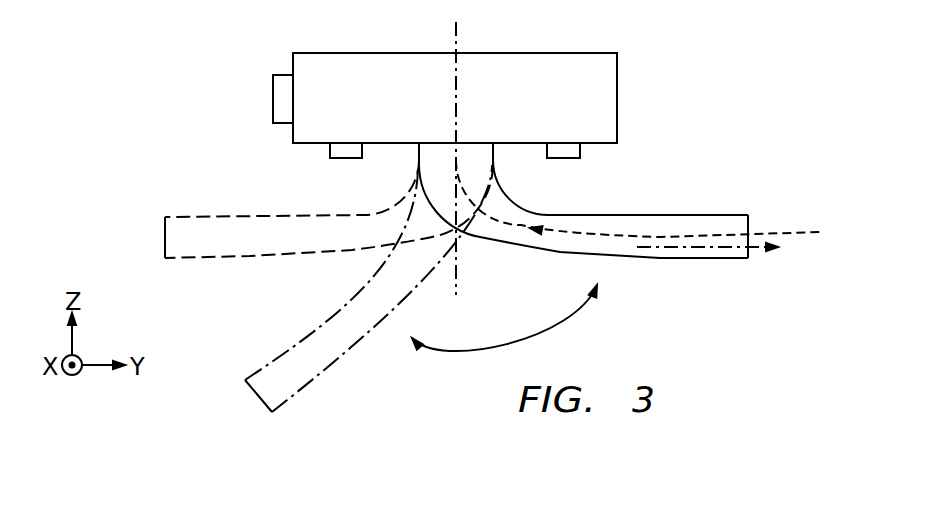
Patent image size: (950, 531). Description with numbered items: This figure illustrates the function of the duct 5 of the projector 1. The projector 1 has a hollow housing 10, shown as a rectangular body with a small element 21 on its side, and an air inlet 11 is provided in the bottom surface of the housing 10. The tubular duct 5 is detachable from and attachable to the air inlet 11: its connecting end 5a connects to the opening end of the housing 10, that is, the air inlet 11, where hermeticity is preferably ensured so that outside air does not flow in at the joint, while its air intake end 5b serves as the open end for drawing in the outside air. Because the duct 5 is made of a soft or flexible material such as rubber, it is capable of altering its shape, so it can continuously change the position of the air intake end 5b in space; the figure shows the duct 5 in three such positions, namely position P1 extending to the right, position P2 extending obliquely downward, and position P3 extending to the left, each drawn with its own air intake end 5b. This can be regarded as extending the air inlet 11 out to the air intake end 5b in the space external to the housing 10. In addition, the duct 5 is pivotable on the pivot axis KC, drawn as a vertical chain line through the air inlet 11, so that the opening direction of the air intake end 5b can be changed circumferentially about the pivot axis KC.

The projector 1 is at (147, 101).
The housing 10 is at (618, 98).
The cutter unit 21 is at (282, 75).
The air inlet 11 is at (427, 155).
The connecting end 5a is at (488, 122).
The duct 5 is at (458, 312).
The air intake end 5b is at (766, 199).
The pivot axis KC is at (457, 32).
The position P1 is at (719, 197).
The position P2 is at (290, 425).
The position P3 is at (230, 198).